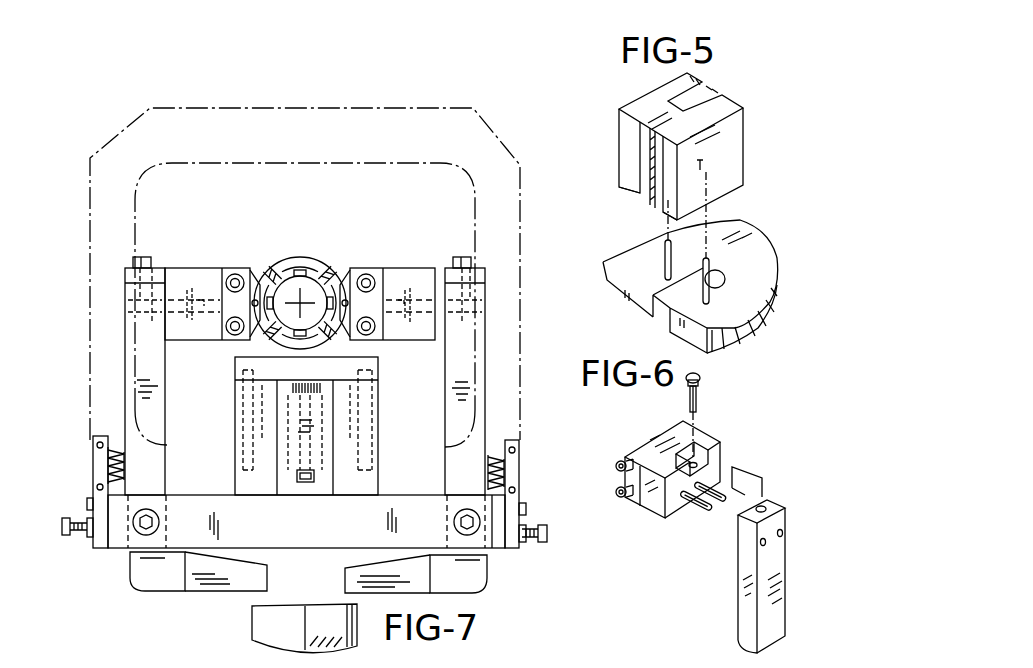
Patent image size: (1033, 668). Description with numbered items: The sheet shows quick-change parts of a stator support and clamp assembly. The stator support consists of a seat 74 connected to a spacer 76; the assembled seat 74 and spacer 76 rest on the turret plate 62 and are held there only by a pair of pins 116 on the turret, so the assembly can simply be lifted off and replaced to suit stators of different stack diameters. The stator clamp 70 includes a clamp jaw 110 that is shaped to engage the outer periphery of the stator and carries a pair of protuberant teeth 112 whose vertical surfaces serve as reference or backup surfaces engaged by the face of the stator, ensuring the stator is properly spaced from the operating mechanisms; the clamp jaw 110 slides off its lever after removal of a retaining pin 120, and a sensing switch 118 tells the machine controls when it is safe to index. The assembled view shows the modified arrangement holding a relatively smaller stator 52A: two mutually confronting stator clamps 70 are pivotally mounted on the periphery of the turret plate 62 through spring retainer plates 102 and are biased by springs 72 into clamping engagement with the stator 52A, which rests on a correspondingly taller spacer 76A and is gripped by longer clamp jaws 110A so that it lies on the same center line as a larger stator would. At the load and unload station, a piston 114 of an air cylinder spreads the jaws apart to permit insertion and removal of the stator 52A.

In FIG. 7, the stator 52A is at (295, 250).
In FIG. 5, the turret plate 62 is at (737, 305).
In FIG. 6, the stator clamp 70 is at (783, 488).
In FIG. 7, the spring 72 is at (113, 450).
In FIG. 5, the seat 74 is at (745, 117).
In FIG. 5, the spacer 76 is at (660, 196).
In FIG. 7, the spacer 76A is at (330, 445).
In FIG. 7, the spring retainer plate 102 is at (97, 473).
In FIG. 6, the clamp jaw 110 is at (655, 443).
In FIG. 7, the clamp jaw 110A is at (197, 273).
In FIG. 6, the protuberant teeth 112 is at (618, 486).
In FIG. 7, the piston 114 is at (262, 620).
In FIG. 7, the pin 116 is at (366, 478).
In FIG. 5, the pin 116 is at (665, 253).
In FIG. 7, the sensing switch 118 is at (428, 300).
In FIG. 6, the sensing switch 118 is at (727, 500).
In FIG. 7, the retaining pin 120 is at (147, 256).
In FIG. 6, the retaining pin 120 is at (700, 400).